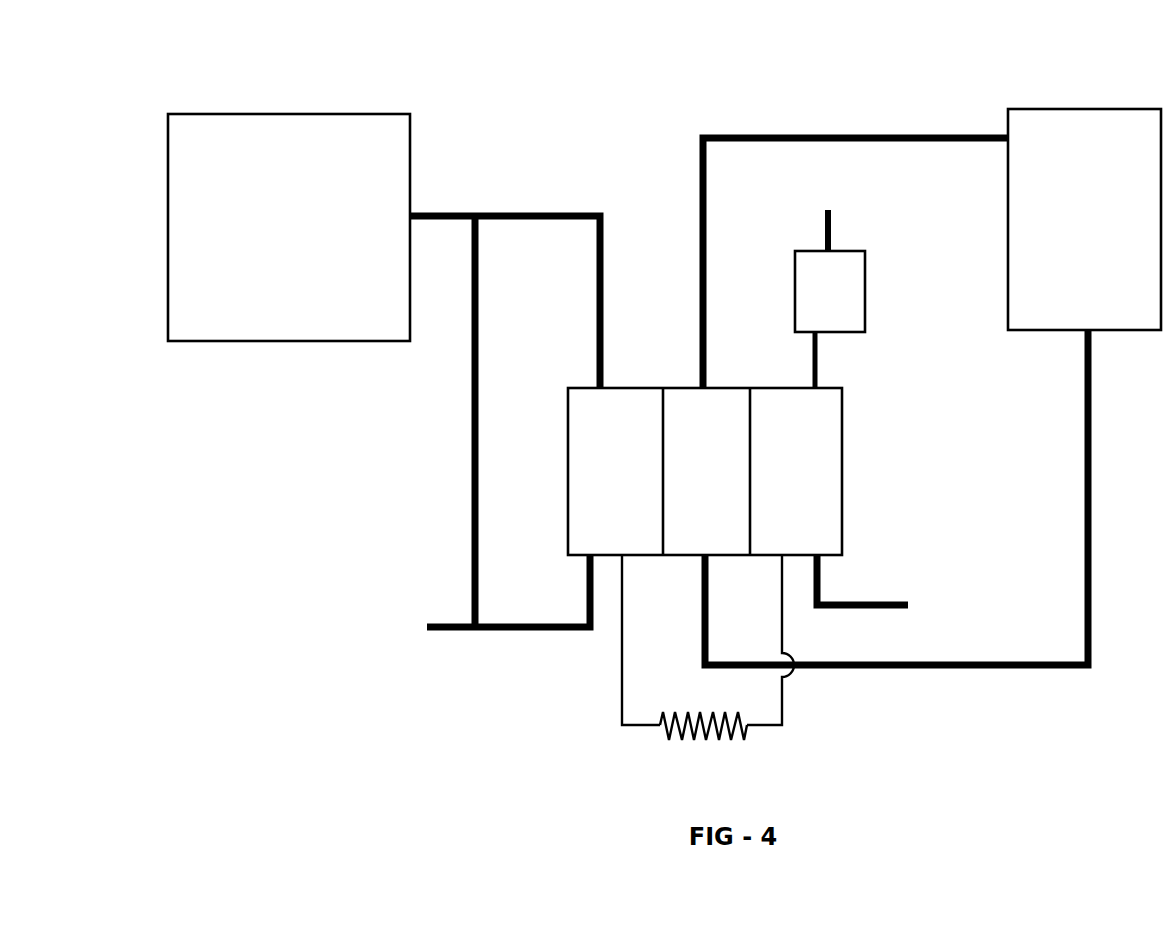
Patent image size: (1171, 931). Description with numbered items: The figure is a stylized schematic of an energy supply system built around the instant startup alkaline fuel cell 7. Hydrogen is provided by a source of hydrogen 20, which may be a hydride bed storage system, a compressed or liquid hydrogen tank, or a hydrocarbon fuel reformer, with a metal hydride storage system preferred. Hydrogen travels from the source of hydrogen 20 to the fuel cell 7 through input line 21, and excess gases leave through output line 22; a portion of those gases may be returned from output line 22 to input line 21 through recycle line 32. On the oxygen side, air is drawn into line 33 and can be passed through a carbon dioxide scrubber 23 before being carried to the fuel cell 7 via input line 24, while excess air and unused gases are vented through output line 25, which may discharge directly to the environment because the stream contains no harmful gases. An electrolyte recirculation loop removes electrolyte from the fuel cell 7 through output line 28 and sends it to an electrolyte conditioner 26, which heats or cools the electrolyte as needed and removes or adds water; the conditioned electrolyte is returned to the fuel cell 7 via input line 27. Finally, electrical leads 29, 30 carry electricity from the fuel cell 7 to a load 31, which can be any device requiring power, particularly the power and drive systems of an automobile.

The alkaline fuel cell 7 is at (705, 471).
The source of hydrogen 20 is at (289, 227).
The input line 21 is at (546, 212).
The output line 22 is at (533, 625).
The carbon dioxide scrubber 23 is at (830, 291).
The input line 24 is at (817, 358).
The output line 25 is at (885, 600).
The electrolyte conditioner 26 is at (1084, 219).
The input line 27 is at (855, 209).
The output line 28 is at (1018, 660).
The electrical lead 29 is at (622, 680).
The electrical lead 30 is at (782, 718).
The load 31 is at (700, 738).
The recycle line 32 is at (478, 323).
The line 33 is at (833, 235).